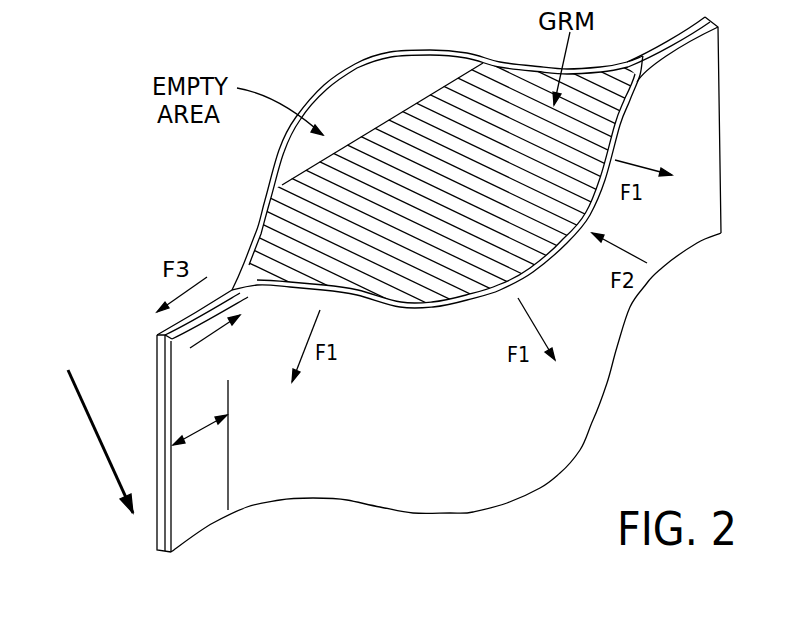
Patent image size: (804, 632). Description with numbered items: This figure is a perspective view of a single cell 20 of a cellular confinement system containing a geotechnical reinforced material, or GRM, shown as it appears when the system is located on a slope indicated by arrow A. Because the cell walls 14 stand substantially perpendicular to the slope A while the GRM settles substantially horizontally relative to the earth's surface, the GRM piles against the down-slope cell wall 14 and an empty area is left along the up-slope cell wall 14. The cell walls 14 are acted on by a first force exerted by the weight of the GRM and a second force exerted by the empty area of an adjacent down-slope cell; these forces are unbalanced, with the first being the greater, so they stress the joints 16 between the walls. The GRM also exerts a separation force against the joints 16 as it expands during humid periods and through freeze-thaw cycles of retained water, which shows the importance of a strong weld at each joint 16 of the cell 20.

The cell wall 14 is at (408, 448).
The joint 16 is at (197, 442).
The cell 20 is at (258, 185).
The slope A is at (92, 428).